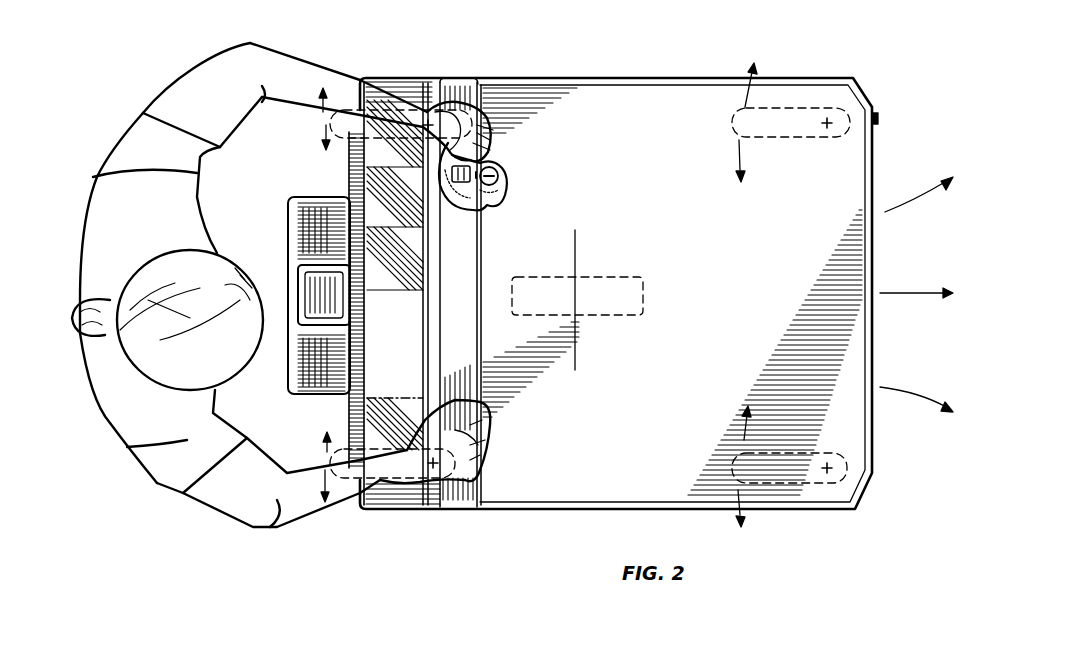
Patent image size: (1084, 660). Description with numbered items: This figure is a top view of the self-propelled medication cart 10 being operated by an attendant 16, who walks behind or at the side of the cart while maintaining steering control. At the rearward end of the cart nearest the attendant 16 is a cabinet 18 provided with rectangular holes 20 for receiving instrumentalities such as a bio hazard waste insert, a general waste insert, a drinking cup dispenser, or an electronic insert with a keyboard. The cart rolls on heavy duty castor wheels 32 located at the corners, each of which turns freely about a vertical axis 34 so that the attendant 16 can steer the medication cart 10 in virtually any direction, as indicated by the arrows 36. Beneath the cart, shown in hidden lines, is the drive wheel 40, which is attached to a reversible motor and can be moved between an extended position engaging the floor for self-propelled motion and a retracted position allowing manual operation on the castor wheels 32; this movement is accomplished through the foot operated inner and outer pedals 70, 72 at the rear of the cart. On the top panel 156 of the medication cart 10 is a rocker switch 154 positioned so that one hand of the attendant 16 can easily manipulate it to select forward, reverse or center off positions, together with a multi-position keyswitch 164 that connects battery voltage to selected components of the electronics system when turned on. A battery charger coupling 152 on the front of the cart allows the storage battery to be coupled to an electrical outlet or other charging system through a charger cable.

The medication cart 10 is at (667, 61).
The attendant 16 is at (157, 480).
The cabinet 18 is at (361, 170).
The rectangular holes 20 is at (377, 423).
The castor wheel 32 is at (372, 110).
The vertical axes 34 is at (430, 125).
The arrows 36 is at (885, 212).
The drive wheel 40 is at (620, 317).
The inner pedal 70 is at (333, 305).
The outer pedal 72 is at (288, 227).
The battery charger coupling 152 is at (880, 118).
The rocker switch 154 is at (483, 207).
The top panel 156 is at (690, 226).
The multi-position keyswitch 164 is at (499, 165).